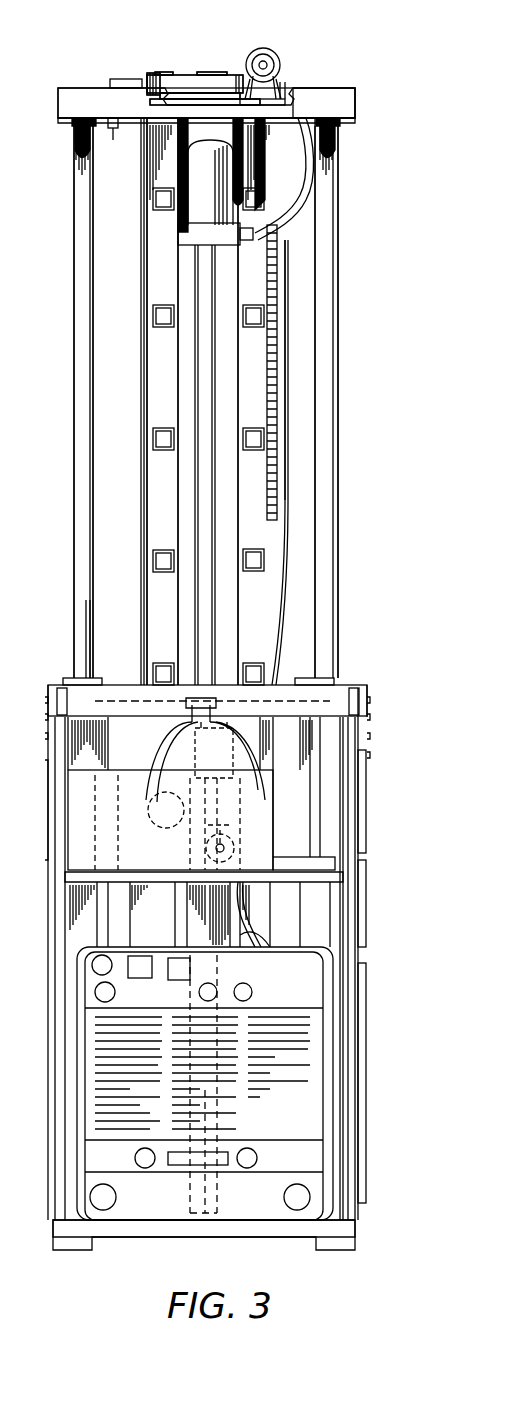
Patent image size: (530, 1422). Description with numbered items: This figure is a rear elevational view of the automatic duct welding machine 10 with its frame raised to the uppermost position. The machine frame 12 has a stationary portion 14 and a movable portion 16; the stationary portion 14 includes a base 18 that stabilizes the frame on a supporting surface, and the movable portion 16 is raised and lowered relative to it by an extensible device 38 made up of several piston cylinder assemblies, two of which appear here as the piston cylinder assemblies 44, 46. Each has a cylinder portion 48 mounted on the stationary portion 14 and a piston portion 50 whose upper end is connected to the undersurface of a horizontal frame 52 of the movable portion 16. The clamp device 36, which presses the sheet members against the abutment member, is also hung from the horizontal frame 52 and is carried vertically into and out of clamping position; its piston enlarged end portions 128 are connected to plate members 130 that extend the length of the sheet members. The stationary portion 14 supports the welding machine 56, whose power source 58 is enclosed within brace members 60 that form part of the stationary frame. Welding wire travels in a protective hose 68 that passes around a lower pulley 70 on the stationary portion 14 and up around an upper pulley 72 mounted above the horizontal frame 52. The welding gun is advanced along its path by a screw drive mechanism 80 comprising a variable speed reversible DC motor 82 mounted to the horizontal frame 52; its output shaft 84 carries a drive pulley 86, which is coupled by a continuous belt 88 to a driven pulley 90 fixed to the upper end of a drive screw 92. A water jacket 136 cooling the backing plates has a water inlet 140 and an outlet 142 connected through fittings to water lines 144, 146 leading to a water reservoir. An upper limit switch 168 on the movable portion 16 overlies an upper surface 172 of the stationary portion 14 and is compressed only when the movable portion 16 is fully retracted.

The automatic duct welding machine 10 is at (92, 42).
The machine frame 12 is at (380, 1181).
The stationary portion 14 is at (380, 745).
The movable portion 16 is at (370, 111).
The base 18 is at (348, 1243).
The clamp device 36 is at (125, 441).
The extensible device 38 is at (353, 510).
The piston cylinder assembly 44 is at (367, 690).
The piston cylinder assembly 46 is at (68, 680).
The cylinder portion 48 is at (75, 760).
The piston portion 50 is at (76, 346).
The horizontal frame 52 is at (335, 88).
The welding machine 56 is at (343, 1047).
The power source 58 is at (330, 990).
The brace members 60 is at (55, 830).
The hose 68 is at (280, 476).
The lower pulley 70 is at (258, 940).
The upper pulley 72 is at (258, 50).
The screw drive mechanism 80 is at (155, 26).
The DC motor 82 is at (200, 200).
The output shaft 84 is at (165, 101).
The drive pulley 86 is at (213, 72).
The continuous belt 88 is at (190, 80).
The driven pulley 90 is at (150, 74).
The drive screw 92 is at (170, 72).
The enlarged end portion 128 is at (153, 215).
The plate member 130 is at (157, 281).
The water jacket 136 is at (196, 932).
The water inlet 140 is at (190, 700).
The outlet 142 is at (225, 760).
The water line 144 is at (160, 745).
The water line 146 is at (265, 780).
The upper limit switch 168 is at (113, 130).
The upper surface 172 is at (113, 683).